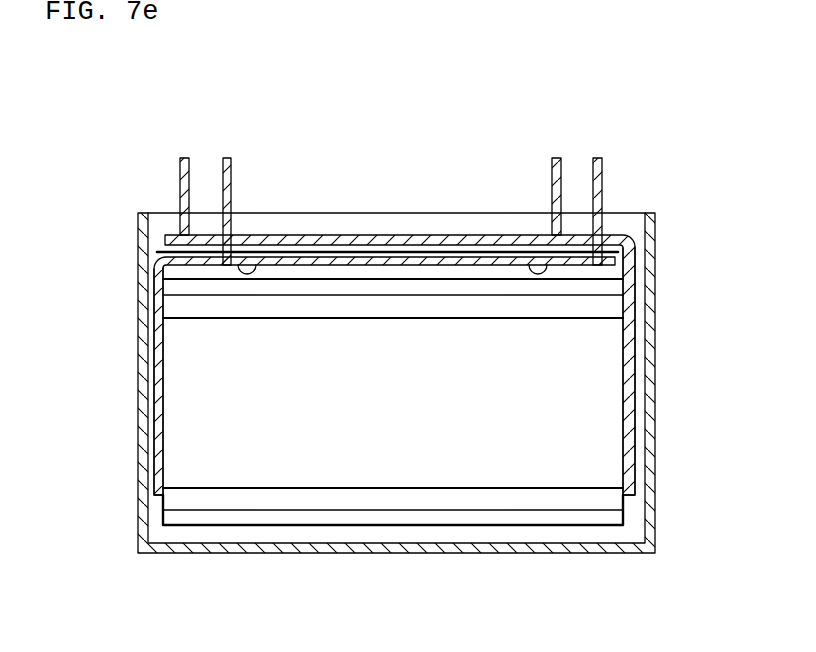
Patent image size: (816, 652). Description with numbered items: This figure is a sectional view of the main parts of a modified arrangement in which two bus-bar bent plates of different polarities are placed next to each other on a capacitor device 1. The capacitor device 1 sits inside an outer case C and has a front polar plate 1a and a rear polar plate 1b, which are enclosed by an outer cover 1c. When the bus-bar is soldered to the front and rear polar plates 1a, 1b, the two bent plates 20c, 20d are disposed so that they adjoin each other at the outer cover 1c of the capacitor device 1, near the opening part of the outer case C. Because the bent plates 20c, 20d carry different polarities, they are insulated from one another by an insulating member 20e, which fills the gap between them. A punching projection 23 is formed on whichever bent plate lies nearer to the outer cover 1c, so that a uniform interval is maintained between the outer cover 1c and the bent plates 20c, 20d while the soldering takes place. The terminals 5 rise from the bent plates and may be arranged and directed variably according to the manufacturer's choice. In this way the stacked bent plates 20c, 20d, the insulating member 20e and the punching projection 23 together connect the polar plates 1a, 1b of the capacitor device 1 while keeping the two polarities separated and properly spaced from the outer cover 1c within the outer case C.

The outer case C is at (366, 548).
The terminal 5 is at (227, 158).
The bent plate 20c is at (418, 240).
The bent plate 20d is at (335, 258).
The insulating member 20e is at (489, 253).
The punching projection 23 is at (247, 262).
The capacitor device 1 is at (484, 492).
The polar plate 1a is at (631, 503).
The polar plate 1b is at (162, 502).
The outer cover 1c is at (393, 394).